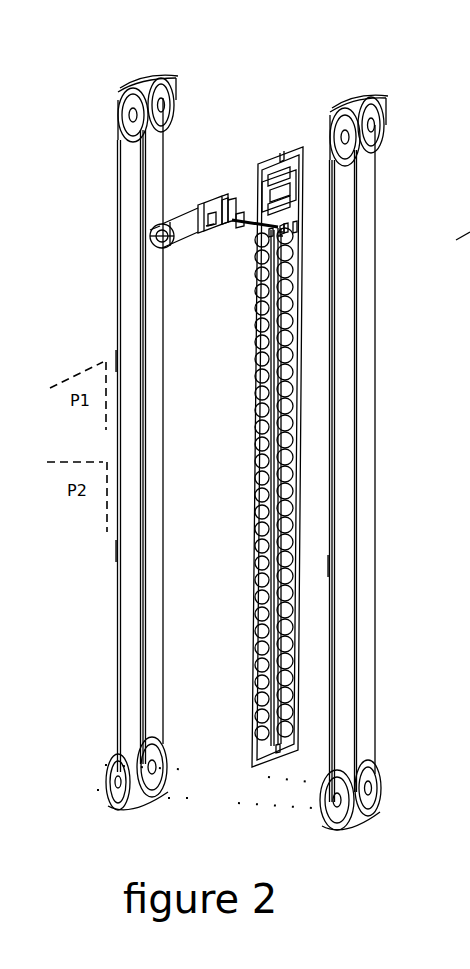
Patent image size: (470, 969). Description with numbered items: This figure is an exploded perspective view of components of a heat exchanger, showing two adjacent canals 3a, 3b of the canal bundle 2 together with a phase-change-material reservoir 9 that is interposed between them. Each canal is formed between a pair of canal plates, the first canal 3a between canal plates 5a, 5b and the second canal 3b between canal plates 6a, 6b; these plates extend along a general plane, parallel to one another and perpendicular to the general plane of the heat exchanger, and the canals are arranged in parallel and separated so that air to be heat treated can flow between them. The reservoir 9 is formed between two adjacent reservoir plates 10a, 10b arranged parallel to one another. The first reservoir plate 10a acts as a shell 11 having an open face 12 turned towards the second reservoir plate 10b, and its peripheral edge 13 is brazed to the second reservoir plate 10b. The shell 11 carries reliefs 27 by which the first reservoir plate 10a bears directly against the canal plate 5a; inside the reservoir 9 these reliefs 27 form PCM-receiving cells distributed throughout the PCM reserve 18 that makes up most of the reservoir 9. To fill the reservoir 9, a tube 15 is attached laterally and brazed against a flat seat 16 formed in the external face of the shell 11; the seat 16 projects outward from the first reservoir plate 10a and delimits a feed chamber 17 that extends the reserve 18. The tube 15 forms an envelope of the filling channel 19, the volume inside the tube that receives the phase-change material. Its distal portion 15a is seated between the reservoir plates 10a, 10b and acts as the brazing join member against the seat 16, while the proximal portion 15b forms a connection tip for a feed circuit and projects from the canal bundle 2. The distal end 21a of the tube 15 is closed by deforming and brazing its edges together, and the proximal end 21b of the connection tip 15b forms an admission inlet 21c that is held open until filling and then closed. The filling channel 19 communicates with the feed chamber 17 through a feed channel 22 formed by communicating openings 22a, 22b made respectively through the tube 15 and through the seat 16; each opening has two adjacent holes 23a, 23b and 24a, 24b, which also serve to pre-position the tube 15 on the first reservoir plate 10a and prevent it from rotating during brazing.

The canal bundle 2 is at (463, 253).
The canal 3a is at (142, 88).
The canal 3b is at (386, 113).
The canal plate 5a is at (155, 556).
The canal plate 5b is at (118, 578).
The canal plate 6a is at (330, 613).
The canal plate 6b is at (367, 706).
The reservoir 9 is at (246, 434).
The first reservoir plate 10a is at (234, 776).
The second reservoir plate 10b is at (318, 750).
The shell 11 is at (302, 147).
The face 12 is at (284, 468).
The peripheral edge 13 is at (260, 757).
The tube 15 is at (149, 244).
The distal portion 15a is at (218, 236).
The proximal portion 15b is at (157, 226).
The flat seat 16 is at (292, 212).
The feed chamber 17 is at (300, 226).
The PCM reserve 18 is at (284, 536).
The filling channel 19 is at (188, 220).
The distal end 21a is at (231, 216).
The proximal end 21b is at (152, 240).
The admission inlet 21c is at (178, 232).
The feed channel 22 is at (242, 222).
The opening 22a is at (212, 242).
The opening 22b is at (283, 229).
The hole 23a is at (288, 226).
The hole 23b is at (272, 232).
The hole 24a is at (209, 218).
The hole 24b is at (206, 228).
The reliefs 27 is at (254, 416).